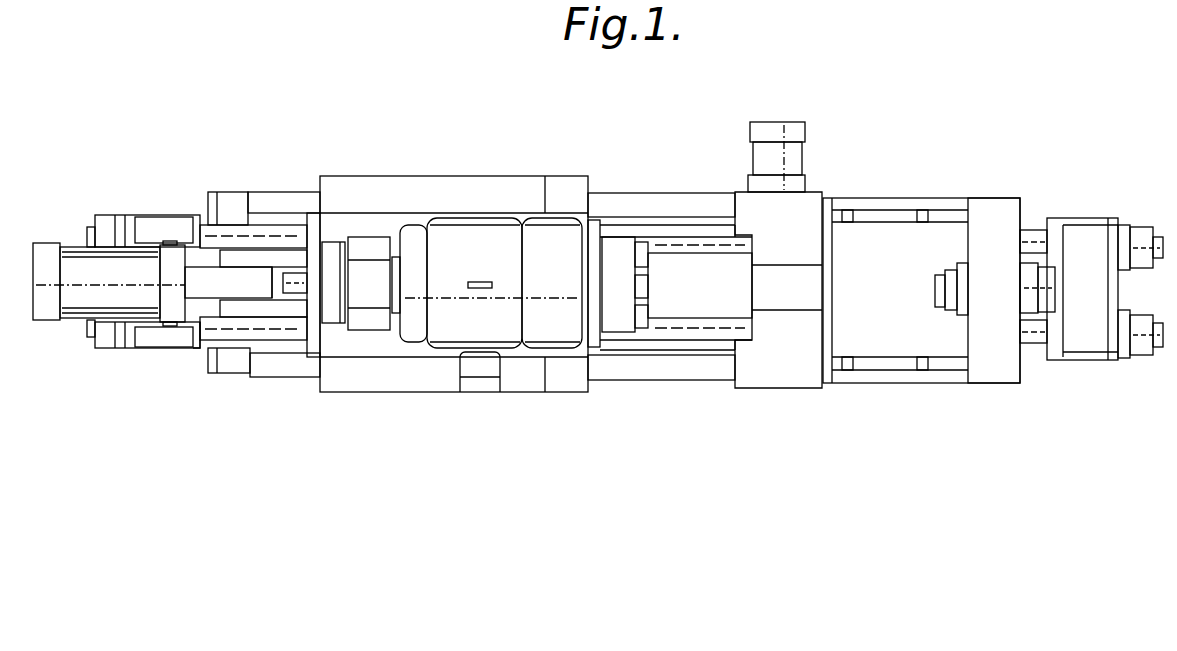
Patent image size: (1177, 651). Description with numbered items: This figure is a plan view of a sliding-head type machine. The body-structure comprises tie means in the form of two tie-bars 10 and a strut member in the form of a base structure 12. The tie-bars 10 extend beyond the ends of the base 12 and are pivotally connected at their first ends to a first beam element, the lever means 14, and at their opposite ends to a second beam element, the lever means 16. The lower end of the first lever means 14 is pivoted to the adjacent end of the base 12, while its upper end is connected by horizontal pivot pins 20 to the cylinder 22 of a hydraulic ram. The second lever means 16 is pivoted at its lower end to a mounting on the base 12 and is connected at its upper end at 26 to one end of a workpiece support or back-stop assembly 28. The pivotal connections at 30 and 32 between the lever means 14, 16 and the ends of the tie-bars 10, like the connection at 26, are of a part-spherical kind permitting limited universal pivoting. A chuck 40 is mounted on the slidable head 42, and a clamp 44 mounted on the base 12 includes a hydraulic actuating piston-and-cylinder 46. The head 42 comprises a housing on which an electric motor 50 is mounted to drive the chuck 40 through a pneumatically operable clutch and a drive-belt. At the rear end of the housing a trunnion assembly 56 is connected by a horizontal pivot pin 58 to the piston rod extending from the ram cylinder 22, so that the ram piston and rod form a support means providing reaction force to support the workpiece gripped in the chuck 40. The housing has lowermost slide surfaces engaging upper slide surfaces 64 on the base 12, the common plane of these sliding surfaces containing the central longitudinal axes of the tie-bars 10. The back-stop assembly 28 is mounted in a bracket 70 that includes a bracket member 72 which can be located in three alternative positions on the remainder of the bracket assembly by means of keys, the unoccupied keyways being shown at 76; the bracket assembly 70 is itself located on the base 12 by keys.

The tie-bars 10 is at (225, 232).
The base structure 12 is at (240, 198).
The first lever means 14 is at (192, 357).
The second lever means 16 is at (1075, 209).
The horizontal pivot pins 20 is at (172, 243).
The cylinder 22 is at (72, 273).
The pivotal connection 26 is at (1058, 320).
The back-stop assembly 28 is at (958, 325).
The pivotal connection 30 is at (127, 207).
The pivotal connection 32 is at (1130, 217).
The chuck 40 is at (615, 248).
The slidable head 42 is at (575, 168).
The clamp 44 is at (785, 373).
The hydraulic actuating piston-and-cylinder 46 is at (790, 127).
The electric motor 50 is at (467, 228).
The trunnion assembly 56 is at (287, 312).
The horizontal pivot pin 58 is at (248, 263).
The upper slide surfaces 64 is at (695, 200).
The bracket 70 is at (890, 193).
The bracket member 72 is at (983, 218).
The unoccupied keyways 76 is at (920, 358).